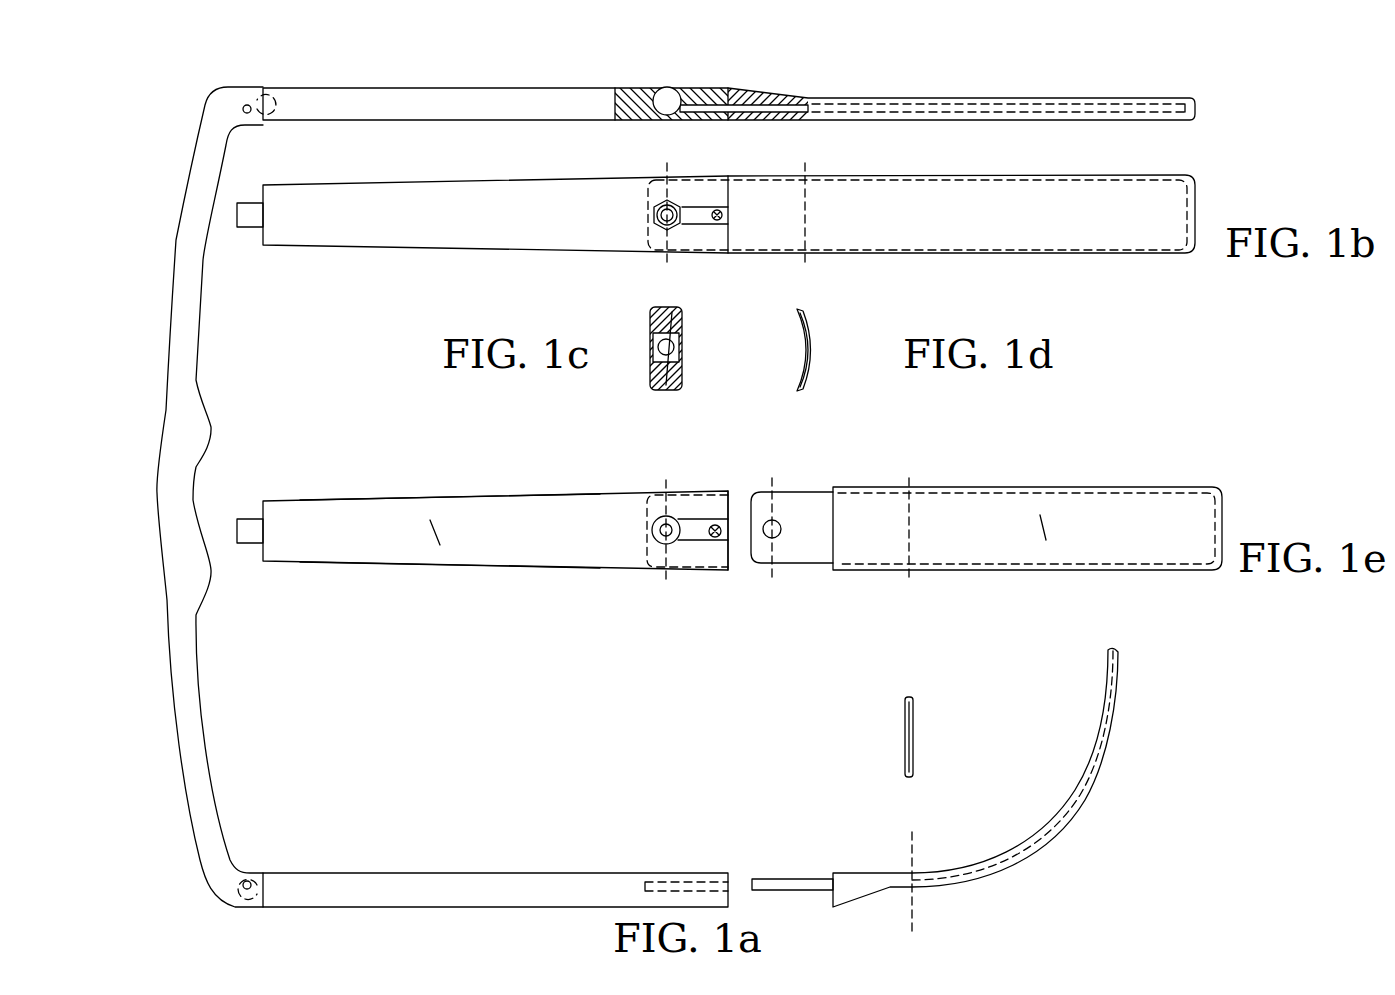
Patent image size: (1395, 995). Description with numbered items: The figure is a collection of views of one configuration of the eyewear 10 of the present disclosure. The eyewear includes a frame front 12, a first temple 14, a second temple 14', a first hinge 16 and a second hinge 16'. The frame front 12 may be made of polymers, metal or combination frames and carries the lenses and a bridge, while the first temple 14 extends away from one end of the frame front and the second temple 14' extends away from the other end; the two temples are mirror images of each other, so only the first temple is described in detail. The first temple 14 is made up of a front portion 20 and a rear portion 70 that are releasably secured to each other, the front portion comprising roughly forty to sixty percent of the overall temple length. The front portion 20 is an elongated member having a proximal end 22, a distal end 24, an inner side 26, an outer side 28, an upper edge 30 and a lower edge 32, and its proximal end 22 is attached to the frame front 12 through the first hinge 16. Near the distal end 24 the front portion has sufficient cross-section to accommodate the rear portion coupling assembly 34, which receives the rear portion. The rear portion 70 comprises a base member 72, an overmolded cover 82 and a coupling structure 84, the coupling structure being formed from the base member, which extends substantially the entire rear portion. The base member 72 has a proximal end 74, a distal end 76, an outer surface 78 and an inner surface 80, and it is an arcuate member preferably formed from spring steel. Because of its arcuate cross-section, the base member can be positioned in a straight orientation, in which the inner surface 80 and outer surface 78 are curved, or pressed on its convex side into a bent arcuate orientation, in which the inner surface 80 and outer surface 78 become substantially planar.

In FIG. 1A, the eyewear 10 is at (155, 912).
In FIG. 1A, the frame front 12 is at (137, 208).
In FIG. 1A, the first temple 14 is at (495, 916).
In FIG. 1A, the second temple 14' is at (725, 78).
In FIG. 1A, the first hinge 16 is at (212, 920).
In FIG. 1E, the first hinge 16 is at (243, 489).
In FIG. 1A, the second hinge 16' is at (211, 75).
In FIG. 1A, the front portion 20 is at (363, 871).
In FIG. 1E, the proximal end 22 is at (282, 478).
In FIG. 1E, the distal end 24 is at (720, 470).
In FIG. 1C, the inner side 26 is at (650, 320).
In FIG. 1E, the inner side 26 is at (588, 490).
In FIG. 1C, the outer side 28 is at (682, 317).
In FIG. 1E, the outer side 28 is at (440, 530).
In FIG. 1E, the upper edge 30 is at (400, 497).
In FIG. 1E, the lower edge 32 is at (395, 566).
In FIG. 1E, the rear portion coupling assembly 34 is at (683, 595).
In FIG. 1E, the rear portion 70 is at (967, 465).
In FIG. 1E, the base member 72 is at (1103, 490).
In FIG. 1E, the proximal end 74 is at (873, 593).
In FIG. 1E, the distal end 76 is at (1190, 458).
In FIG. 1A, the outer surface 78 is at (905, 737).
In FIG. 1D, the outer surface 78 is at (798, 350).
In FIG. 1E, the outer surface 78 is at (1042, 538).
In FIG. 1A, the inner surface 80 is at (914, 740).
In FIG. 1D, the inner surface 80 is at (812, 350).
In FIG. 1E, the overmolded cover 82 is at (1167, 572).
In FIG. 1E, the coupling structure 84 is at (803, 472).